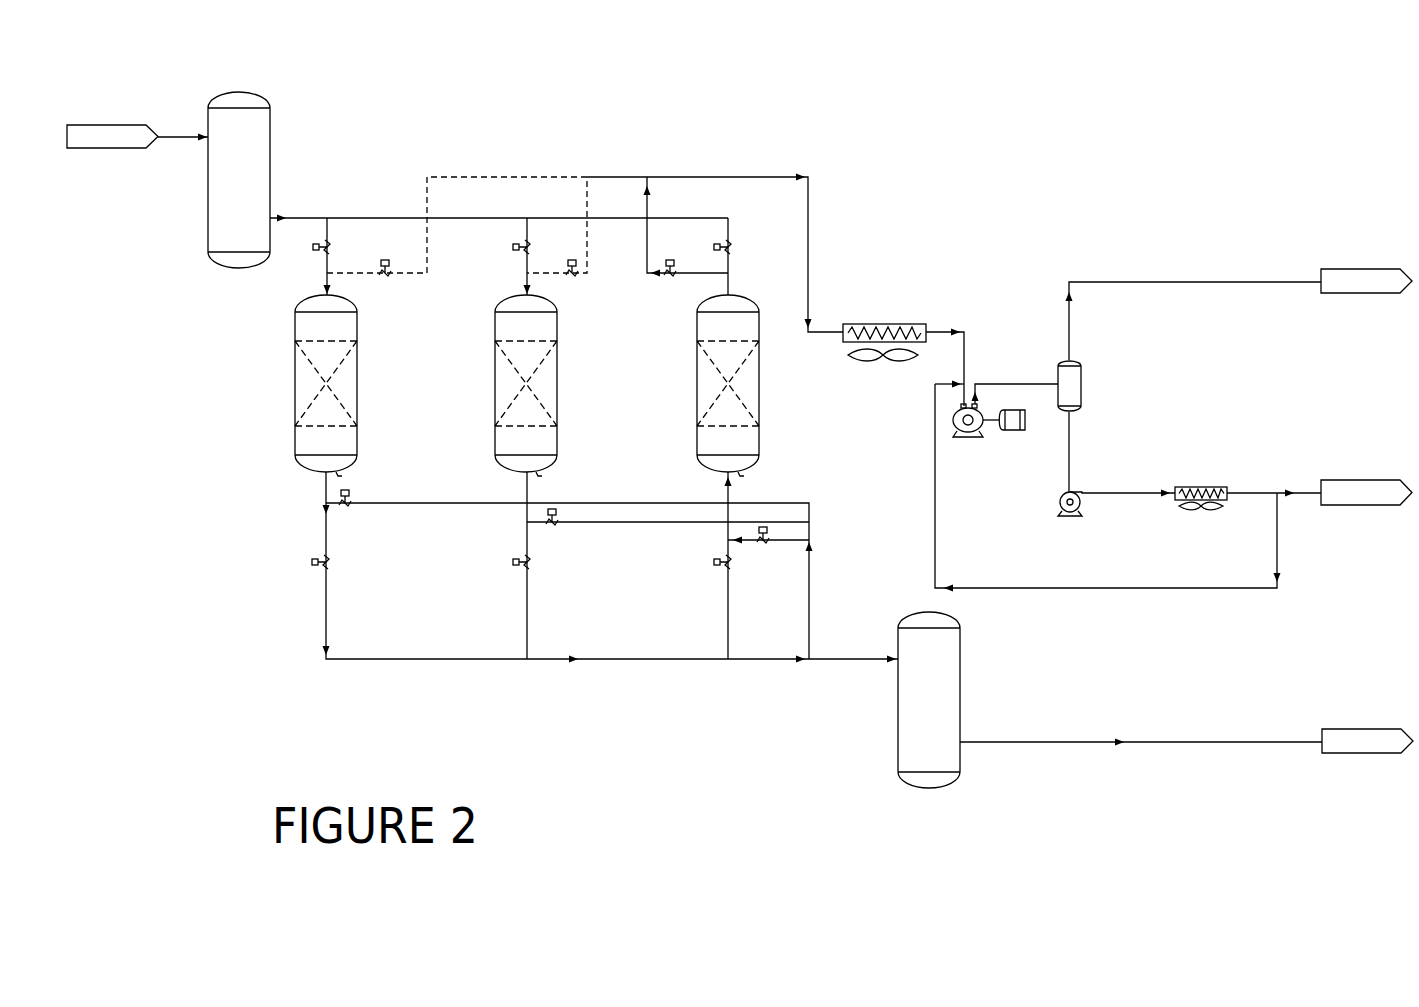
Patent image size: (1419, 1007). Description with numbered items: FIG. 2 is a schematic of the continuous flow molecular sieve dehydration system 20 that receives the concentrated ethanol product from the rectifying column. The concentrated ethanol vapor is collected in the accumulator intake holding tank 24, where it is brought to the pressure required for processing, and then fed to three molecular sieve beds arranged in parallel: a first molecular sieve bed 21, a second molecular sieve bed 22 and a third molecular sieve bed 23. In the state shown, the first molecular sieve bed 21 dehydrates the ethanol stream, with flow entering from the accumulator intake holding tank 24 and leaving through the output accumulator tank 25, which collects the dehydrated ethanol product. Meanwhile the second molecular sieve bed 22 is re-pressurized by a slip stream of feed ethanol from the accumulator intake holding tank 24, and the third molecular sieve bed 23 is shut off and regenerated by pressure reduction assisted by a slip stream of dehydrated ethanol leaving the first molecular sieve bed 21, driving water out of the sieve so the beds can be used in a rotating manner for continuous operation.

The dehydration system 20 is at (1178, 131).
The first molecular sieve bed 21 is at (358, 378).
The second molecular sieve bed 22 is at (558, 378).
The third molecular sieve bed 23 is at (759, 377).
The accumulator intake holding tank 24 is at (271, 178).
The output accumulator tank 25 is at (898, 690).